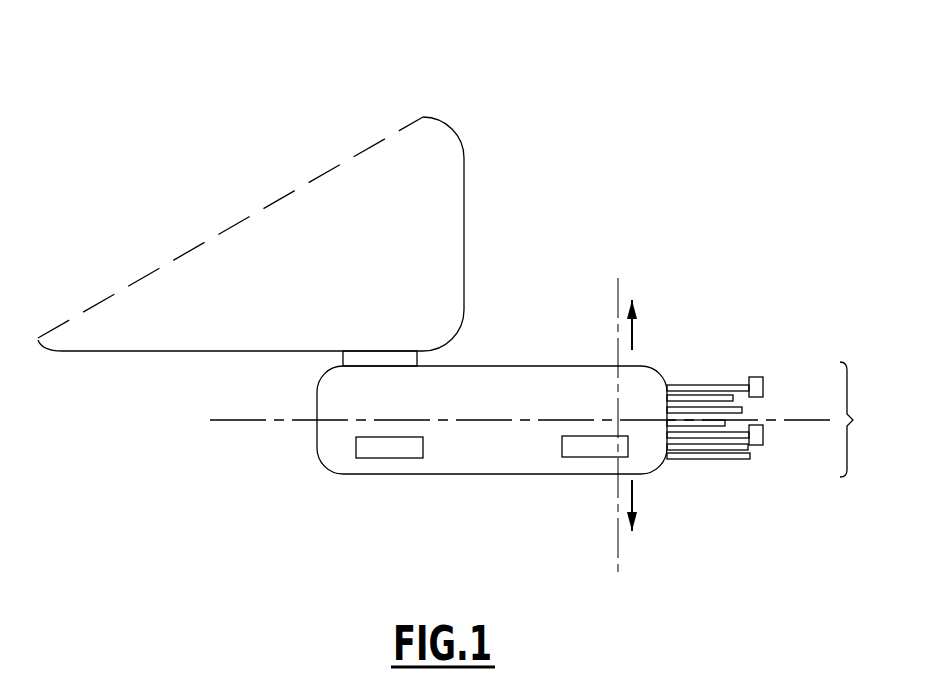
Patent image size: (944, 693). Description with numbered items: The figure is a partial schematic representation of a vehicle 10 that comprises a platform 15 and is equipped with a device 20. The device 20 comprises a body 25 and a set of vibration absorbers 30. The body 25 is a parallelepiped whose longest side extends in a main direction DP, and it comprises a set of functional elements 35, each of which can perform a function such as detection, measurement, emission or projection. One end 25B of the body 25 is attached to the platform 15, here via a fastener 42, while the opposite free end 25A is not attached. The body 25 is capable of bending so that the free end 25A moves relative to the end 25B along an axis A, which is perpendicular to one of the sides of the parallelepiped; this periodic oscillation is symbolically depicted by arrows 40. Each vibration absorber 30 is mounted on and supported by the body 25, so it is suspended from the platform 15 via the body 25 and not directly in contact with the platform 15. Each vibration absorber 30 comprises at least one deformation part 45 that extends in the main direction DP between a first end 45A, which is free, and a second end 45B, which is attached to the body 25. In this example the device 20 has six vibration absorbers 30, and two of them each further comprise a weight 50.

The vehicle 10 is at (780, 113).
The platform 15 is at (120, 351).
The device 20 is at (490, 482).
The body 25 is at (462, 477).
The free end 25A is at (672, 476).
The end 25B is at (313, 481).
The vibration absorbers 30 is at (776, 371).
The functional elements 35 is at (388, 447).
The arrows 40 is at (646, 415).
The fastener 42 is at (342, 358).
The deformation part 45 is at (737, 440).
The first end 45A is at (740, 361).
The second end 45B is at (679, 370).
The weight 50 is at (752, 392).
The main direction DP is at (252, 420).
The axis A is at (607, 413).